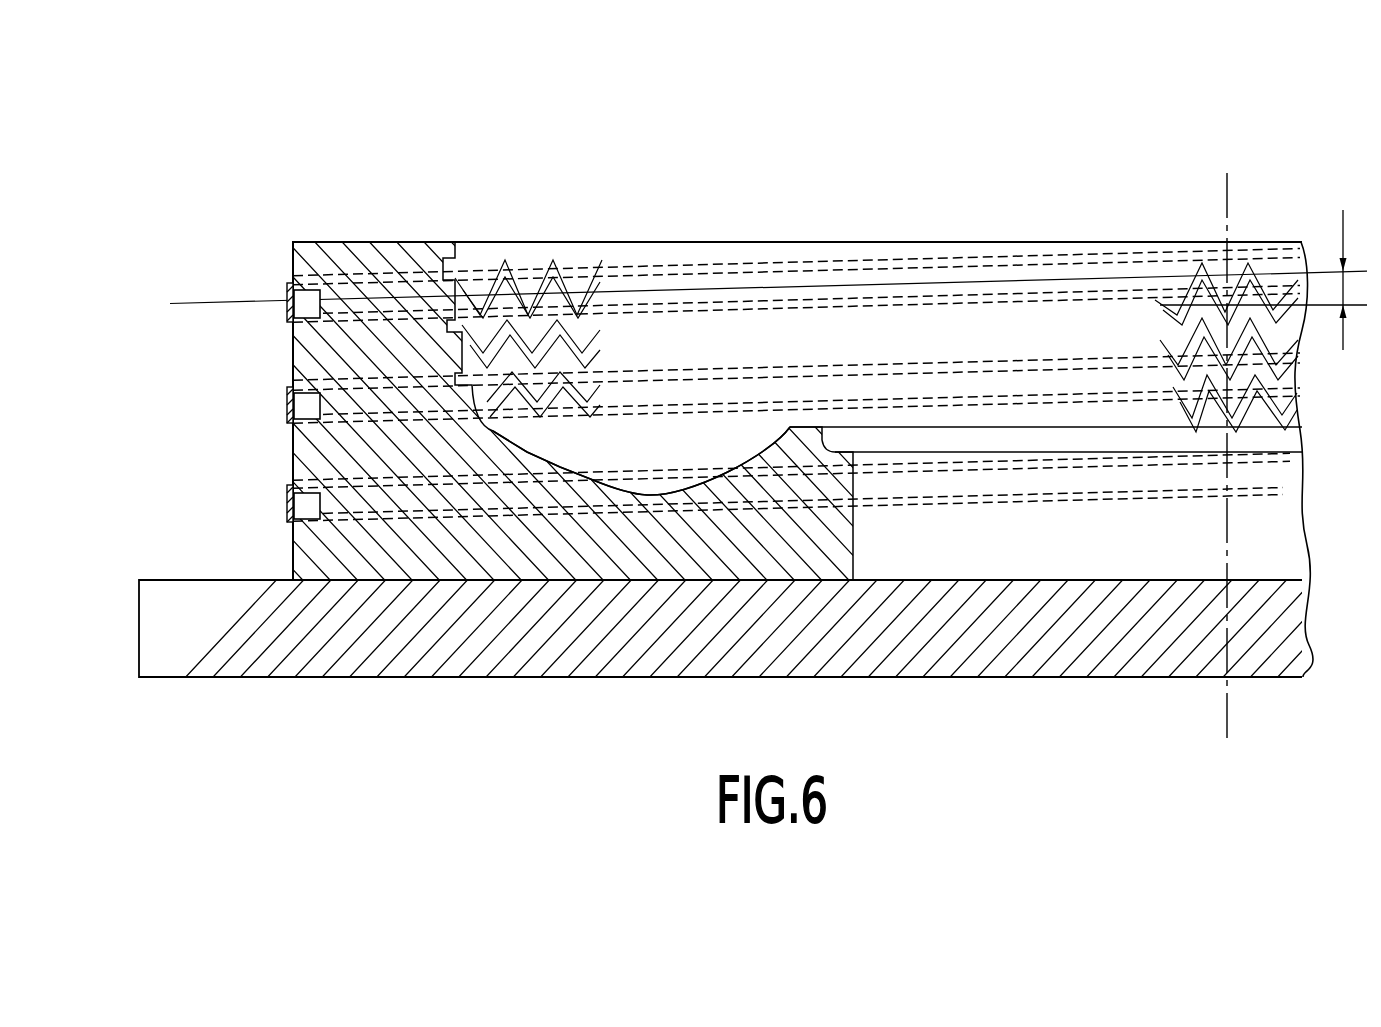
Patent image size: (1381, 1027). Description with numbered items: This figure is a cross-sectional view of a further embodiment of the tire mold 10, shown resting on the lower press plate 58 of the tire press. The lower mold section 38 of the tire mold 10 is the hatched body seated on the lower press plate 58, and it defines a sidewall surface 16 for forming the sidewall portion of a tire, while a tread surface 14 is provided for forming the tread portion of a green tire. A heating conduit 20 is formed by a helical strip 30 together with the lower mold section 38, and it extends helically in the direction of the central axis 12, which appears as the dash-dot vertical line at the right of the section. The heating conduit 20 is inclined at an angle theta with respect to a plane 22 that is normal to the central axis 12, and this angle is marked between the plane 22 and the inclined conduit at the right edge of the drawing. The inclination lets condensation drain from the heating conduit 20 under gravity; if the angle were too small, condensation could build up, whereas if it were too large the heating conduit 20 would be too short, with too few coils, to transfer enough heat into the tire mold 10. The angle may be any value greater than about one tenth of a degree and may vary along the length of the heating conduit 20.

The tire mold 10 is at (855, 213).
The central axis 12 is at (1227, 203).
The tread surface 14 is at (465, 352).
The sidewall surfaces 16 is at (633, 491).
The heating conduit 20 is at (300, 312).
The plane 22 is at (183, 303).
The helical strip 30 is at (290, 292).
The lower mold section 38 is at (400, 263).
The lower press plate 58 is at (150, 580).